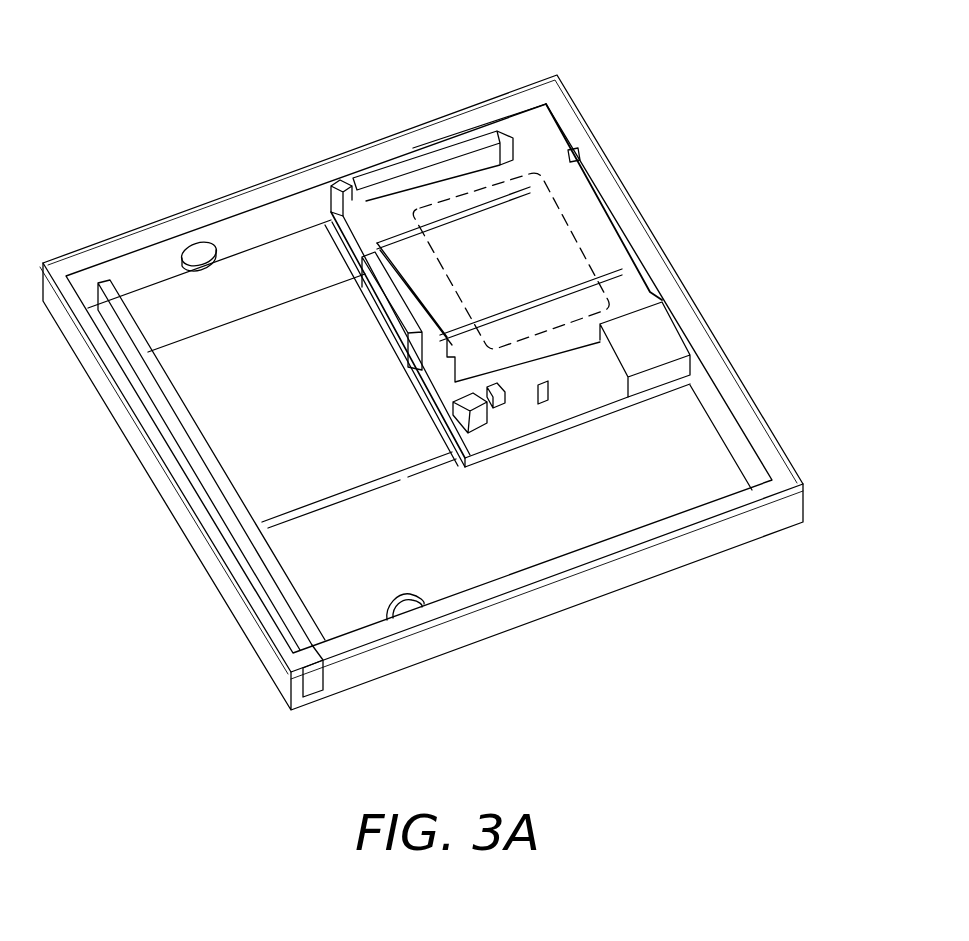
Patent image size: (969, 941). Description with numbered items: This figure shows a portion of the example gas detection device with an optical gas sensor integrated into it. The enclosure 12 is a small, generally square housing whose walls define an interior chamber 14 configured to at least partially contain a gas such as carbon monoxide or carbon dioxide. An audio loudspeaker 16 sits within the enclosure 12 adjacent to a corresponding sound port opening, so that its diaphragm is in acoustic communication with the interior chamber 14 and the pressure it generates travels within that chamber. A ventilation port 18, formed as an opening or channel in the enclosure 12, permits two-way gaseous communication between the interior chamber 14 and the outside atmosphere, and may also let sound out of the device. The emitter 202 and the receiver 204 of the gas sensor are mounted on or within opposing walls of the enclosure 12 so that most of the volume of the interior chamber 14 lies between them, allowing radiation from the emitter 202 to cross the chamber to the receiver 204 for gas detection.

The enclosure 12 is at (563, 72).
The interior chamber 14 is at (240, 440).
The audio loudspeaker 16 is at (595, 207).
The ventilation port 18 is at (315, 697).
The emitter 202 is at (190, 243).
The receiver 204 is at (417, 596).